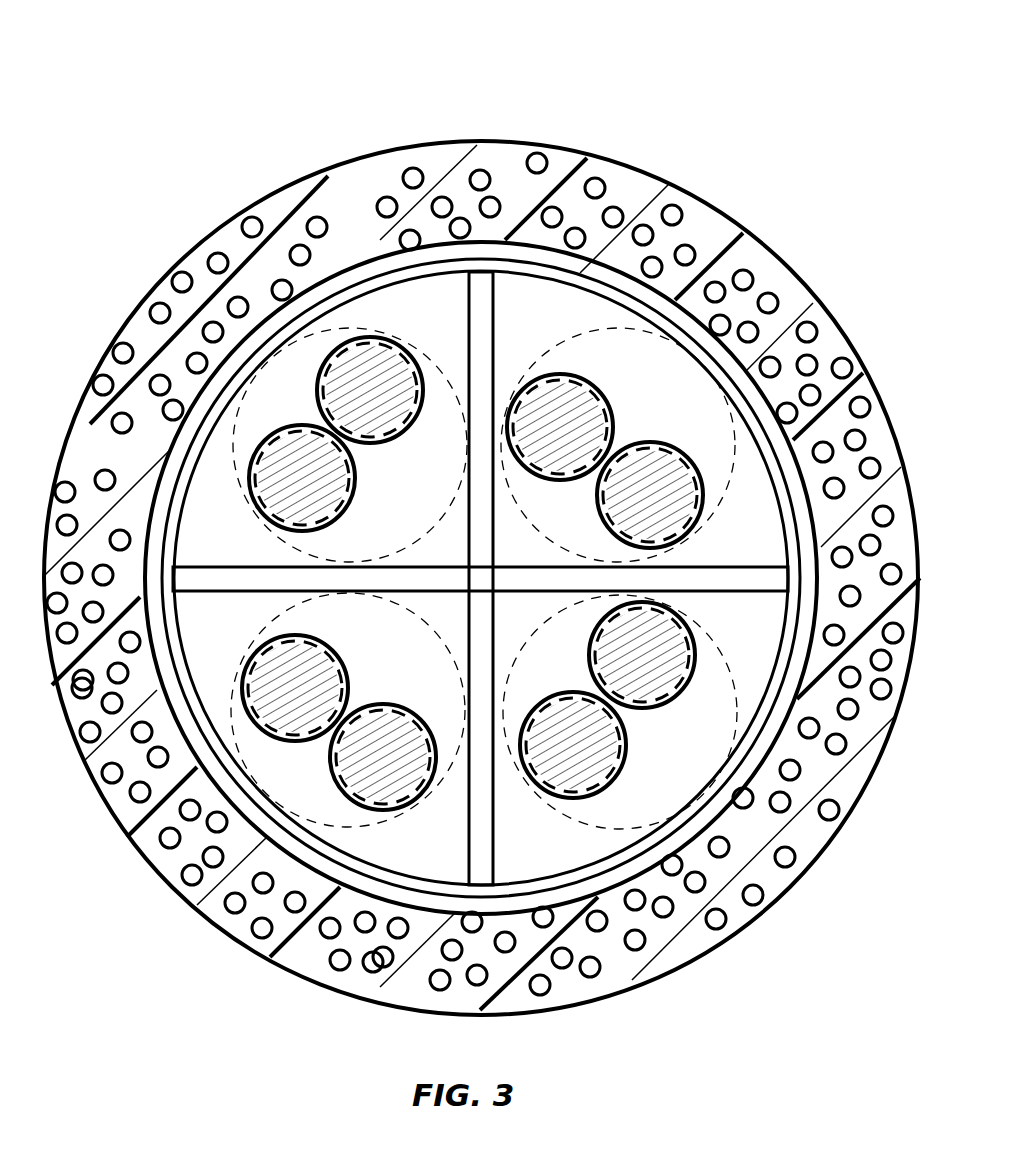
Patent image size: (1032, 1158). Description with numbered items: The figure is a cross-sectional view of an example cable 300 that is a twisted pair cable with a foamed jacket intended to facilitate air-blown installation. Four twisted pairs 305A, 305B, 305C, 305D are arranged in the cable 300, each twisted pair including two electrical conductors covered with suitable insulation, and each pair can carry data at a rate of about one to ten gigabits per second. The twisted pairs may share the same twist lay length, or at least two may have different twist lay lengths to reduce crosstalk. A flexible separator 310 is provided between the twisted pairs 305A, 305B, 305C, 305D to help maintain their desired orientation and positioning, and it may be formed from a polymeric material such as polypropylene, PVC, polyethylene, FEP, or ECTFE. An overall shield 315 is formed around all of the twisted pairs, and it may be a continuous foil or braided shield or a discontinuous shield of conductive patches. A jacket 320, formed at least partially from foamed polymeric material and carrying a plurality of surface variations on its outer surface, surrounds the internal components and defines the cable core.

The cable 300 is at (472, 542).
The twisted pair 305A is at (665, 388).
The twisted pair 305B is at (682, 757).
The twisted pair 305C is at (275, 767).
The twisted pair 305D is at (272, 407).
The separator 310 is at (497, 333).
The overall shield 315 is at (763, 423).
The jacket 320 is at (422, 168).